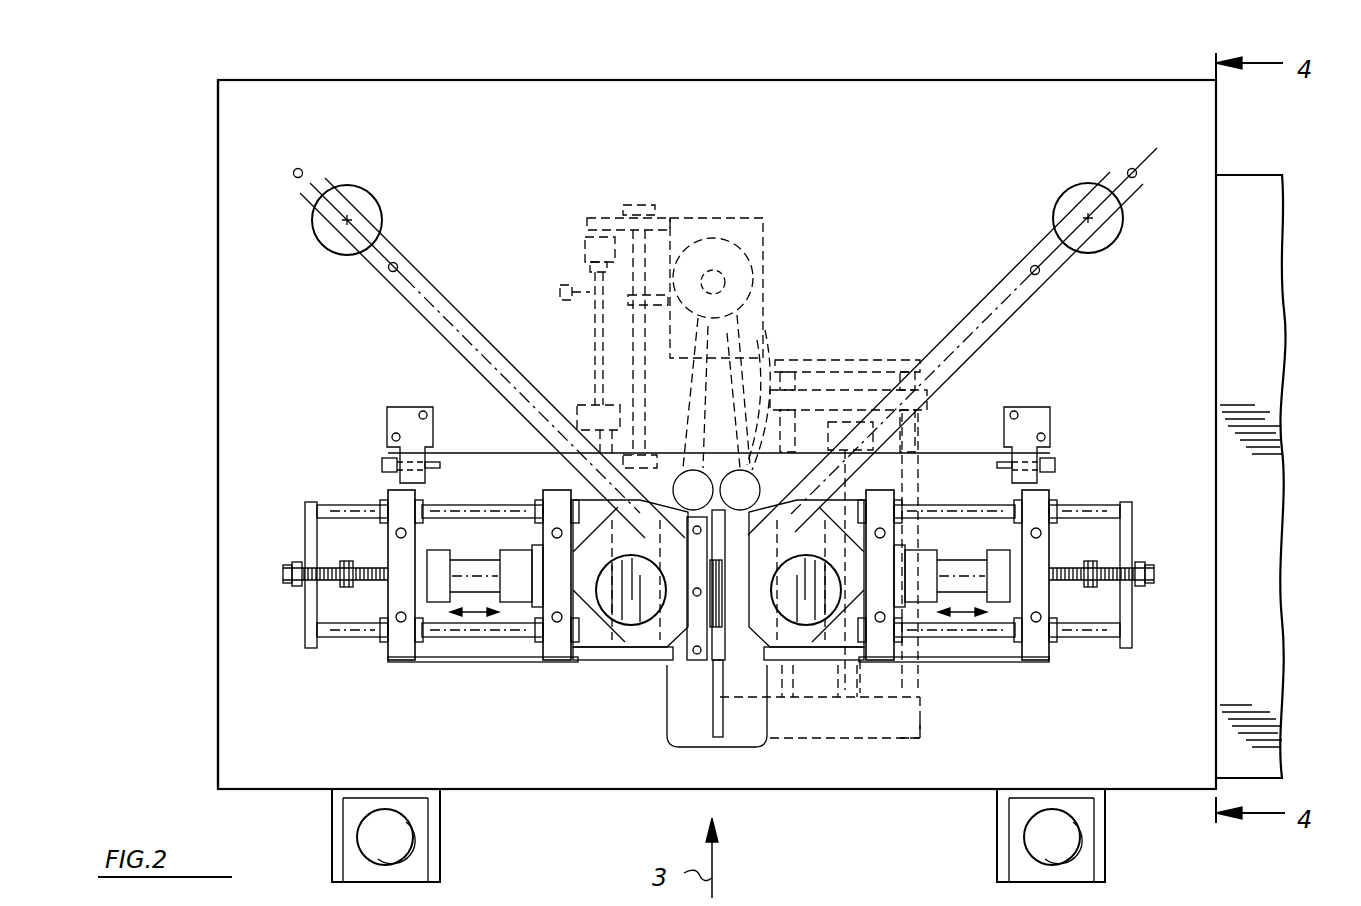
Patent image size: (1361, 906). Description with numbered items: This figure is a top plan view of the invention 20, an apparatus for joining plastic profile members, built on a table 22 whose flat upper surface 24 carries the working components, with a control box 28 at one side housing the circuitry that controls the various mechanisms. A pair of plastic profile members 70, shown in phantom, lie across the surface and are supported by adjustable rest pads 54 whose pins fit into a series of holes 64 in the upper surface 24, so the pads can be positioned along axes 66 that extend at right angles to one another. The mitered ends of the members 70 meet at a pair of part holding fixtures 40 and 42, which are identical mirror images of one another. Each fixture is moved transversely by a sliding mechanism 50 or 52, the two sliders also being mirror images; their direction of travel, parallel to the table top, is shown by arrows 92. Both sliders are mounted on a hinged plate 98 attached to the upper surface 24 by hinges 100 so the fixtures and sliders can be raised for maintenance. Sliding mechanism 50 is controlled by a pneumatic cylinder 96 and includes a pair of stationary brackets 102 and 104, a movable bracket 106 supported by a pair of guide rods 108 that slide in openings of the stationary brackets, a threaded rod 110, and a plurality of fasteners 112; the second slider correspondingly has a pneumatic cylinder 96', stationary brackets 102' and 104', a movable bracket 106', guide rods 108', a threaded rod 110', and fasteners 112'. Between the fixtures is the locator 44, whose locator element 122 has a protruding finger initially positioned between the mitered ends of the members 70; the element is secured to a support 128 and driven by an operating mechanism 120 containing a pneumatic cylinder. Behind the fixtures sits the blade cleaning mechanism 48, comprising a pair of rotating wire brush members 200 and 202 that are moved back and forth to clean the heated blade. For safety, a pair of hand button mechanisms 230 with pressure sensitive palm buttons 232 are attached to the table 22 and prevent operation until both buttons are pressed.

The invention 20 is at (183, 376).
The table 22 is at (218, 723).
The upper surface 24 is at (566, 790).
The control box 28 is at (1278, 604).
The part holding fixture 40 is at (615, 648).
The part holding fixture 42 is at (826, 648).
The locator 44 is at (732, 752).
The blade cleaning mechanism 48 is at (770, 270).
The sliding mechanism 50 is at (440, 675).
The sliding mechanism 52 is at (1000, 668).
The adjustable rest pad 54 is at (375, 207).
The holes 64 is at (304, 168).
The axes 66 is at (432, 296).
The plastic profile member 70 is at (498, 330).
The arrows 92 is at (480, 640).
The pneumatic cylinder 96 is at (485, 542).
The pneumatic cylinder 96' is at (952, 541).
The hinged plate 98 is at (930, 470).
The hinges 100 is at (400, 405).
The stationary bracket 102 is at (441, 539).
The stationary bracket 102' is at (1085, 535).
The stationary bracket 104 is at (540, 559).
The stationary bracket 104' is at (941, 512).
The movable bracket 106 is at (273, 570).
The movable bracket 106' is at (1157, 563).
The guide rods 108 is at (420, 561).
The guide rods 108' is at (1017, 564).
The threaded rod 110 is at (292, 558).
The threaded rod 110' is at (1139, 588).
The fasteners 112 is at (310, 595).
The fasteners 112' is at (1122, 550).
The operating mechanism 120 is at (847, 748).
The locator element 122 is at (713, 677).
The support 128 is at (918, 745).
The rotating brush member 200 is at (760, 328).
The rotating brush member 202 is at (768, 358).
The hand button mechanism 230 is at (437, 806).
The palm buttons 232 is at (378, 815).